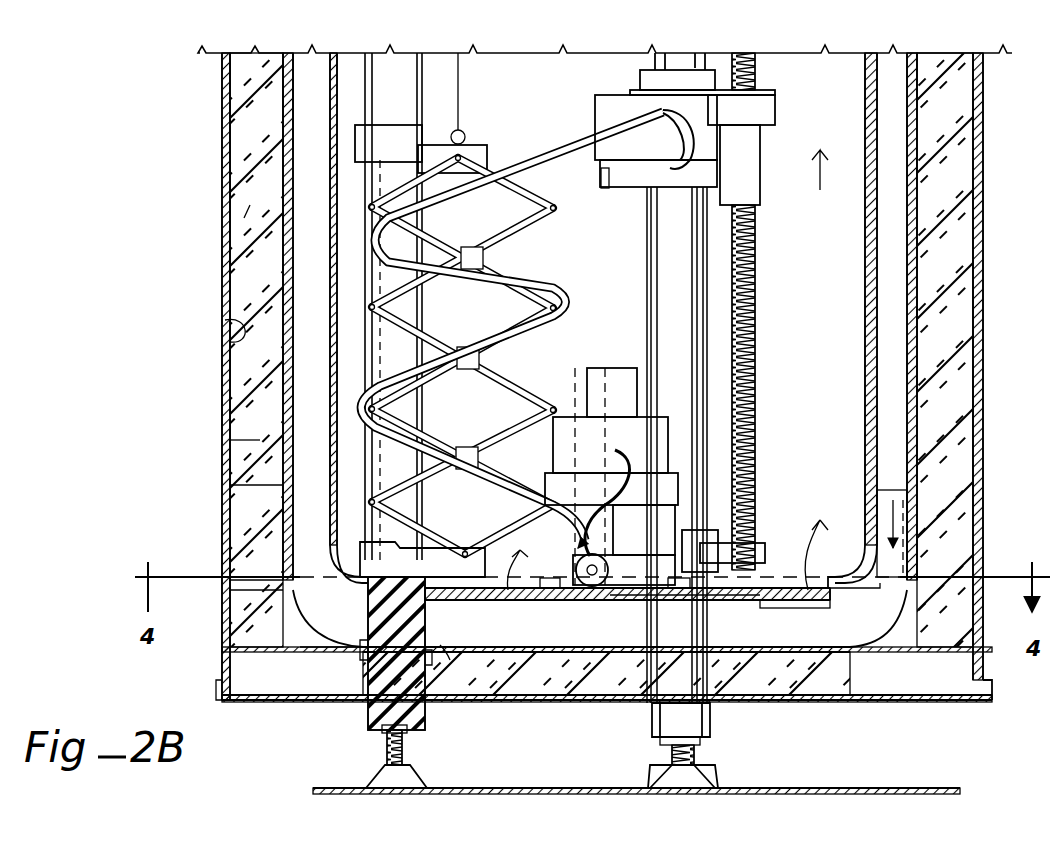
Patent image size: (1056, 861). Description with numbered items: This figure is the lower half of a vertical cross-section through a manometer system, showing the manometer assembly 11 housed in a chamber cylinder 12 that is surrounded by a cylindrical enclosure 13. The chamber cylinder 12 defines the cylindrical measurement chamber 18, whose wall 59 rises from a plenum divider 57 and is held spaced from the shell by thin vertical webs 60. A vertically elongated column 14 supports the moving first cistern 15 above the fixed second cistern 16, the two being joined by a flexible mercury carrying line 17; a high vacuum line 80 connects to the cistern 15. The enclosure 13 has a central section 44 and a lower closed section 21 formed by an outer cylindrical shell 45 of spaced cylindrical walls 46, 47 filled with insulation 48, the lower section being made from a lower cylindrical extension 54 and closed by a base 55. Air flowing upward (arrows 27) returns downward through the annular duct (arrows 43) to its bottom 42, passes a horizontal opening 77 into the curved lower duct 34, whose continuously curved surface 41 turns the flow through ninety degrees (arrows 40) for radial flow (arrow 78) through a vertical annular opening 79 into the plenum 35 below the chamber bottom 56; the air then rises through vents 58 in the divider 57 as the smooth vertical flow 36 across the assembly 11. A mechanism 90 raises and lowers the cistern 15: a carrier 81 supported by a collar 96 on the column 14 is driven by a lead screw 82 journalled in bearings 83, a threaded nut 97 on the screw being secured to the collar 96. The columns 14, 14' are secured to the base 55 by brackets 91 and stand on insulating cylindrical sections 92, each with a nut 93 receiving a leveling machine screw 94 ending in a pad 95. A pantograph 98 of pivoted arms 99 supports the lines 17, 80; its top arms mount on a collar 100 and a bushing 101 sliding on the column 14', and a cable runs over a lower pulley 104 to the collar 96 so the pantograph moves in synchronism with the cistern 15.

The manometer assembly 11 is at (355, 282).
The chamber cylinder 12 is at (330, 76).
The cylindrical enclosure 13 is at (212, 402).
The column 14 is at (656, 445).
The column 14' is at (420, 306).
The first cistern 15 is at (605, 105).
The second cistern 16 is at (625, 395).
The mercury carrying line 17 is at (660, 165).
The measurement chamber 18 is at (840, 248).
The lower closed enclosure section 21 is at (505, 705).
The arrows 27 is at (820, 140).
The curved lower duct 34 is at (330, 647).
The plenum 35 is at (780, 660).
The arrows 36 is at (818, 495).
The arrows 40 is at (335, 610).
The continuously curved surface 41 is at (300, 628).
The bottom 42 is at (300, 515).
The arrows 43 is at (892, 312).
The central section 44 is at (222, 204).
The outer cylindrical shell 45 is at (248, 213).
The cylindrical wall 46 is at (242, 330).
The cylindrical wall 47 is at (290, 366).
The insulation 48 is at (248, 450).
The lower cylindrical extension 54 is at (283, 596).
The base 55 is at (230, 702).
The bottom 56 is at (660, 598).
The plenum divider 57 is at (770, 600).
The vents 58 is at (560, 600).
The wall 59 is at (872, 505).
The webs 60 is at (900, 460).
The horizontal opening 77 is at (920, 520).
The arrow 78 is at (480, 615).
The vertical annular opening 79 is at (440, 650).
The high vacuum line 80 is at (535, 160).
The carrier 81 is at (742, 128).
The lead screw 82 is at (750, 225).
The bearings 83 is at (745, 530).
The mechanism 90 is at (757, 268).
The brackets 91 is at (445, 730).
The cylindrical section 92 is at (365, 705).
The nut 93 is at (385, 745).
The machine screw 94 is at (370, 768).
The pad 95 is at (370, 780).
The collar 96 is at (605, 190).
The threaded nut 97 is at (750, 98).
The pantograph 98 is at (392, 323).
The arms 99 is at (500, 305).
The collar 100 is at (458, 100).
The bushing 101 is at (355, 147).
The lower pulley 104 is at (592, 586).